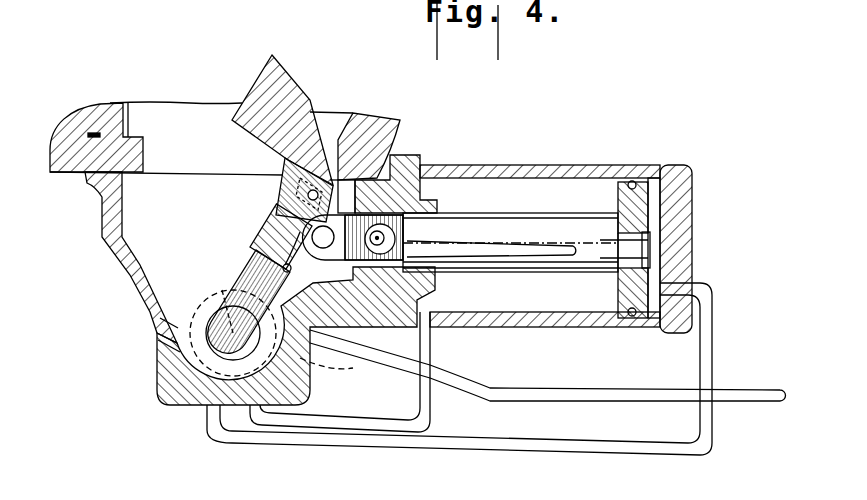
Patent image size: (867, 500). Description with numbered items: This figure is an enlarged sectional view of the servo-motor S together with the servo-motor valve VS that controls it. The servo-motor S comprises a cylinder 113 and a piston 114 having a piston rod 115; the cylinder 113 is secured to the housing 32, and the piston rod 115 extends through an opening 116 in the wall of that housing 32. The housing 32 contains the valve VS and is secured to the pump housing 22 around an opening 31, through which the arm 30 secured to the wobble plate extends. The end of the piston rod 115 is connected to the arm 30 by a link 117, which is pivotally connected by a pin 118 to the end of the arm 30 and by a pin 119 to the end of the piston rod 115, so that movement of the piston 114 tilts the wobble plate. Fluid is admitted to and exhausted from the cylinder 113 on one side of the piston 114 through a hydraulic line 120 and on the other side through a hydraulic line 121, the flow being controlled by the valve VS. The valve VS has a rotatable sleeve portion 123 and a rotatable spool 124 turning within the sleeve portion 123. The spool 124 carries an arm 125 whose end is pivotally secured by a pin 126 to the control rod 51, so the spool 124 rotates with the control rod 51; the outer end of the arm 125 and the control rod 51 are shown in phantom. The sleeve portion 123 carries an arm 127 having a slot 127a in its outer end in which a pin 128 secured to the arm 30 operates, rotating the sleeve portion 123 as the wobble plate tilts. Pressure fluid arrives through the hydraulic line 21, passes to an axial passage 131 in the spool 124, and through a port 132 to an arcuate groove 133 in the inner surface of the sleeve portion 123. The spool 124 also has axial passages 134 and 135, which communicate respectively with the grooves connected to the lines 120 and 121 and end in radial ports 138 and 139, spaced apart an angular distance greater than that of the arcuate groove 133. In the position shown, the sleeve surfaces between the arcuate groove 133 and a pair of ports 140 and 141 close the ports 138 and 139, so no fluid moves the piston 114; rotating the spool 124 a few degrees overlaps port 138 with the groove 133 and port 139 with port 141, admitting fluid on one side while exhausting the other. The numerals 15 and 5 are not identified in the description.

The pump housing 22 is at (72, 137).
The opening 31 is at (193, 152).
The housing 32 is at (142, 290).
The arm 30 is at (307, 108).
The pin 128 is at (283, 177).
The slot 127a is at (297, 193).
The arm 127 is at (278, 212).
The pin 126 is at (273, 225).
The arm 125 is at (247, 258).
The axial passage 131 is at (222, 287).
The axial passage 134 is at (203, 293).
The port 140 is at (158, 315).
The radial port 138 is at (158, 338).
The servo-motor valve VS is at (162, 365).
The port 132 is at (190, 383).
The valve assembly 15 is at (135, 400).
The arcuate groove 133 is at (197, 408).
The axial passage 135 is at (298, 375).
The radial port 139 is at (297, 393).
The port 141 is at (346, 362).
The rotatable sleeve portion 123 is at (302, 305).
The rotatable spool 124 is at (308, 310).
The pin 118 is at (287, 272).
The opening 116 is at (380, 272).
The piston rod 115 is at (505, 223).
The link 117 is at (353, 260).
The pin 119 is at (405, 227).
The control rod 51 is at (533, 243).
The spring 5 is at (467, 243).
The cylinder 113 is at (595, 173).
The piston 114 is at (630, 178).
The servo-motor S is at (565, 149).
The hydraulic line 21 is at (587, 390).
The hydraulic line 121 is at (425, 403).
The hydraulic line 120 is at (413, 442).